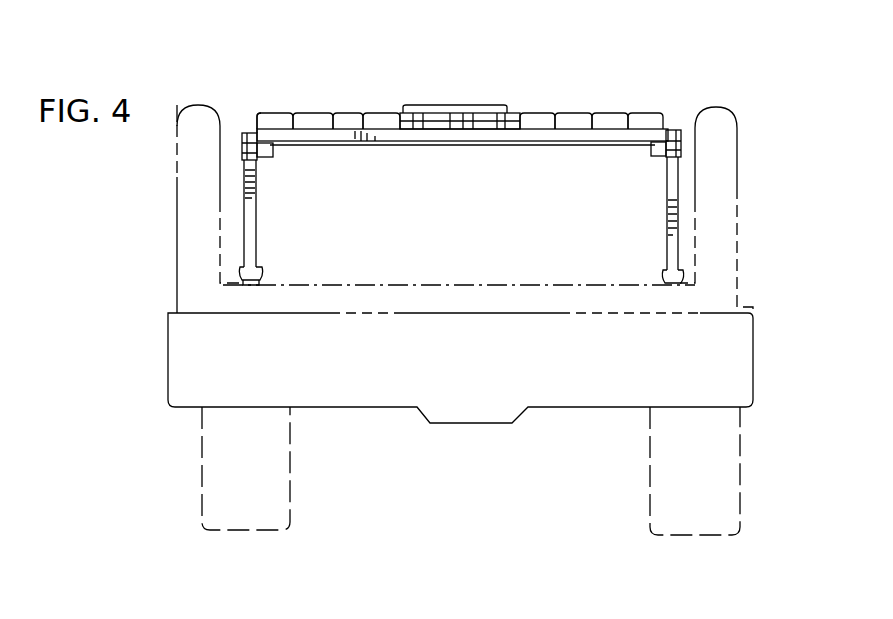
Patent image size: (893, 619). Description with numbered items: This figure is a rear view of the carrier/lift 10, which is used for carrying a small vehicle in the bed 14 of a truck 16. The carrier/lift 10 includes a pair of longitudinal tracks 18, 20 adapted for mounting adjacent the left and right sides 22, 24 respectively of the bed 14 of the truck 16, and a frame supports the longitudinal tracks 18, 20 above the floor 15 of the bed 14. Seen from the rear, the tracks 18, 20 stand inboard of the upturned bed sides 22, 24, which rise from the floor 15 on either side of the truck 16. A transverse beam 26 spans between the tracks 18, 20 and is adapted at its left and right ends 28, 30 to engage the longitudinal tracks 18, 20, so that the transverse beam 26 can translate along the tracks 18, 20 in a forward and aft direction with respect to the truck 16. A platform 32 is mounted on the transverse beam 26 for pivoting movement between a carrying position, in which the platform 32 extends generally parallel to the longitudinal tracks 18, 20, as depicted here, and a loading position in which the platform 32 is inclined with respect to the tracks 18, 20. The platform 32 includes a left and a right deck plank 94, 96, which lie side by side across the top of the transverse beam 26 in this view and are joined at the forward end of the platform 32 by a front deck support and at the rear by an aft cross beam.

The carrier/lift 10 is at (464, 144).
The bed 14 is at (354, 266).
The floor 15 is at (508, 283).
The truck 16 is at (177, 238).
The longitudinal track 18 is at (250, 132).
The longitudinal track 20 is at (682, 129).
The left side 22 is at (220, 170).
The right side 24 is at (693, 130).
The transverse beam 26 is at (565, 143).
The left end 28 is at (265, 158).
The right end 30 is at (653, 155).
The platform 32 is at (280, 112).
The left deck plank 94 is at (347, 118).
The right deck plank 96 is at (615, 117).